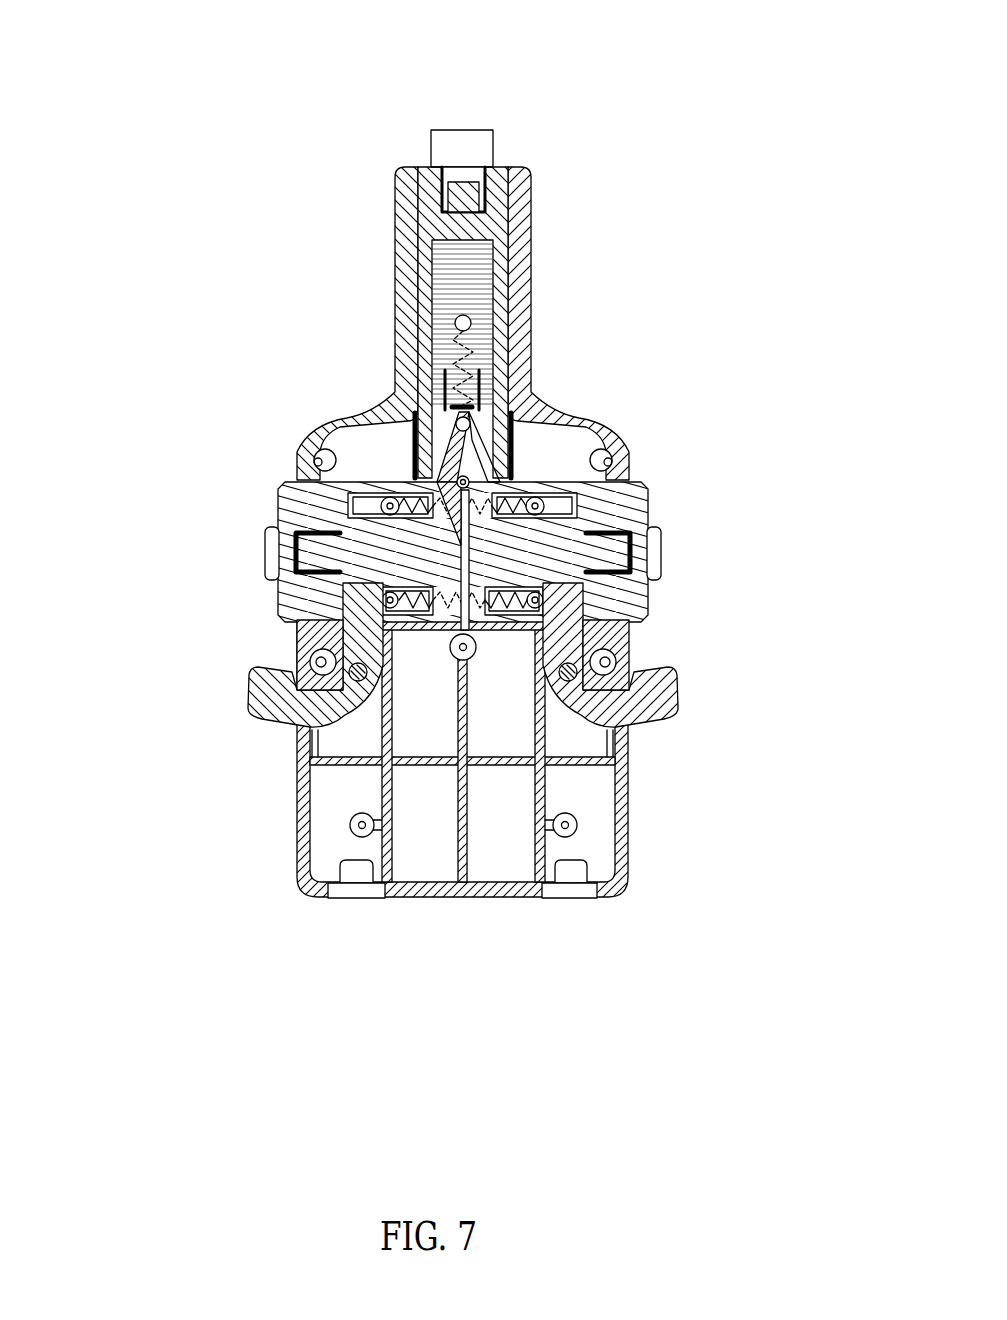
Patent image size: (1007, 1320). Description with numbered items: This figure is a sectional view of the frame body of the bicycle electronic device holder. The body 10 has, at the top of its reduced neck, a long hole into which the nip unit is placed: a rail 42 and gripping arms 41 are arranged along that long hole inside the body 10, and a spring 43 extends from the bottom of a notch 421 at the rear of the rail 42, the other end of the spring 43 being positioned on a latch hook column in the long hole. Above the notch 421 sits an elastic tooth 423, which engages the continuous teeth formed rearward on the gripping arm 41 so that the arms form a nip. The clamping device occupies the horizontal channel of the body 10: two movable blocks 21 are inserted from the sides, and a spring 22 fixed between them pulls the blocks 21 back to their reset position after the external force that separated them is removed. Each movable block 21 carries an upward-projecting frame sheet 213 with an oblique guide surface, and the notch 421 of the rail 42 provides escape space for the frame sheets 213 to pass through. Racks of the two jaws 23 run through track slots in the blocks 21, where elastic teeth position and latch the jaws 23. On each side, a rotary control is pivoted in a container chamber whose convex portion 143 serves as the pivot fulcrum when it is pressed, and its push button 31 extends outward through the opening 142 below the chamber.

The body 10 is at (622, 890).
The movable block 21 is at (628, 512).
The spring 22 is at (517, 487).
The jaw 23 is at (272, 540).
The push button 31 is at (245, 690).
The gripping arm 41 is at (482, 133).
The rail 42 is at (427, 307).
The spring 43 is at (475, 330).
The opening 142 is at (308, 742).
The convex portion 143 is at (298, 634).
The frame sheet 213 is at (427, 437).
The notch 421 is at (487, 420).
The elastic tooth 423 is at (458, 192).